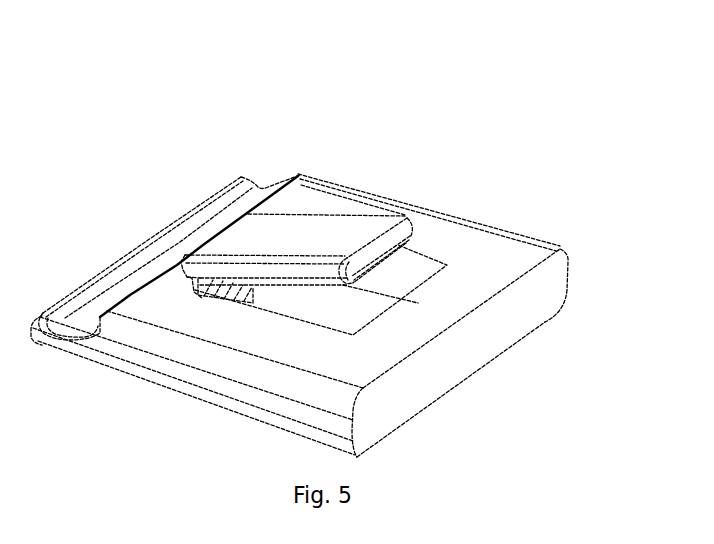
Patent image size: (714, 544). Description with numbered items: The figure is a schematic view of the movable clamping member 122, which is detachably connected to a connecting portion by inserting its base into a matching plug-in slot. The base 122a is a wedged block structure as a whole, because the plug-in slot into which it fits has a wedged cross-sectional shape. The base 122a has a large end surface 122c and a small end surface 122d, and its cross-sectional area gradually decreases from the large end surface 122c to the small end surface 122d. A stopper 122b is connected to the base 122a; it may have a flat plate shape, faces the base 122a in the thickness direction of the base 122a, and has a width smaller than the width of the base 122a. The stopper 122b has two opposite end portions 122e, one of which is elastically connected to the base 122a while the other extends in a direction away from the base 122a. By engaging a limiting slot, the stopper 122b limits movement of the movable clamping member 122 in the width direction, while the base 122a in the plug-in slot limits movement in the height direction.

The movable clamping member 122 is at (321, 38).
The base 122a is at (500, 272).
The stopper 122b is at (327, 227).
The large end surface 122c is at (477, 350).
The small end surface 122d is at (148, 240).
The end portions 122e is at (407, 218).